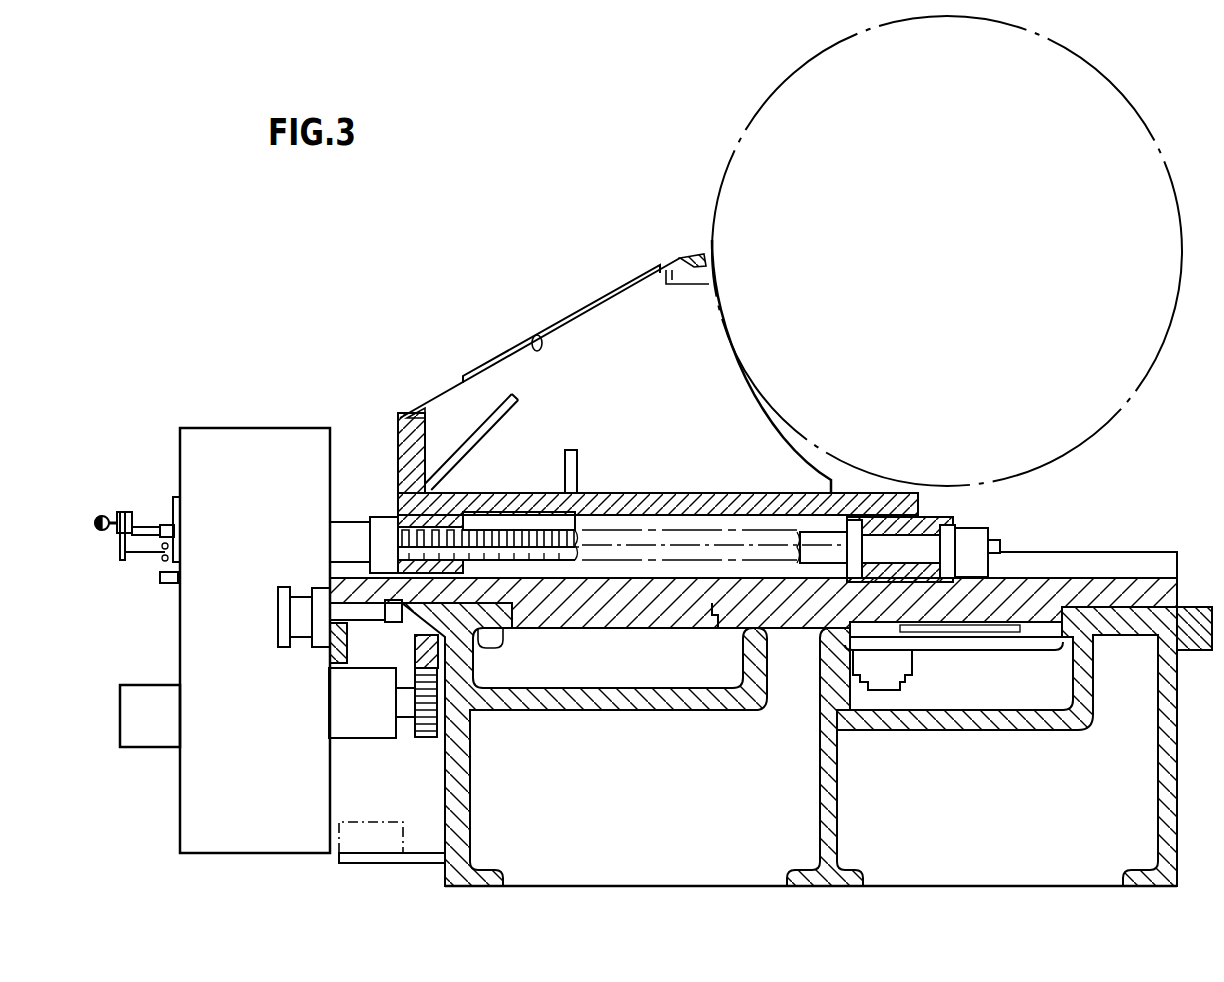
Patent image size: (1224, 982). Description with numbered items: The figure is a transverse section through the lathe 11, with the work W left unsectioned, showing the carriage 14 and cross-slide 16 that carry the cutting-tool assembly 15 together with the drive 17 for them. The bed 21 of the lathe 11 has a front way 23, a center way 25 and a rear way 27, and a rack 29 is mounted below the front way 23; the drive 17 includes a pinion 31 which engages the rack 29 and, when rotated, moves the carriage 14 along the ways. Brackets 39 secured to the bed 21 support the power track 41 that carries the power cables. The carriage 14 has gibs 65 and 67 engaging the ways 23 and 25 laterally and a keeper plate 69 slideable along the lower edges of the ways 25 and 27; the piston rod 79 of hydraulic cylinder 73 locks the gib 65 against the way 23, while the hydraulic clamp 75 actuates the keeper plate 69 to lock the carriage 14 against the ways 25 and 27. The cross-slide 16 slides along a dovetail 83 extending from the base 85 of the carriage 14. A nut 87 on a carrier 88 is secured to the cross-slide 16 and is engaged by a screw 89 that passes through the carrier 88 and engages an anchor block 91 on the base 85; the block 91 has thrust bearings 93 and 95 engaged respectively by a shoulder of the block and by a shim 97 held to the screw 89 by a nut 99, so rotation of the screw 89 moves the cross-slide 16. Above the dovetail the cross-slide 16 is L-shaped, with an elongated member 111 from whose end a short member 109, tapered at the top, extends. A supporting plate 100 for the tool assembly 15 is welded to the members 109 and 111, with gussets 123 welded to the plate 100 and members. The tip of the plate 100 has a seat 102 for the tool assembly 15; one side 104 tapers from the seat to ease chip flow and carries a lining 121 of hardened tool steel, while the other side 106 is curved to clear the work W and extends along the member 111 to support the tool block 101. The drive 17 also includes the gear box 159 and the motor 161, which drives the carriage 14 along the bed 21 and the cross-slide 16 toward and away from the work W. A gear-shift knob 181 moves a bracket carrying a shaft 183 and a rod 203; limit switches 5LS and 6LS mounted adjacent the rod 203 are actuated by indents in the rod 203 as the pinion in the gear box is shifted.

The work W is at (957, 312).
The lathe 11 is at (807, 734).
The carriage 14 is at (650, 634).
The cutting-tool assembly 15 is at (506, 311).
The cross-slide 16 is at (731, 490).
The drive 17 is at (154, 557).
The bed 21 is at (467, 830).
The front way 23 is at (503, 650).
The center way 25 is at (750, 630).
The rear way 27 is at (1134, 633).
The rack 29 is at (414, 650).
The pinion 31 is at (428, 737).
The brackets 39 is at (345, 858).
The power track 41 is at (397, 838).
The gib 65 is at (396, 618).
The gib 67 is at (722, 620).
The keeper plate 69 is at (993, 648).
The hydraulic cylinder 73 is at (278, 625).
The hydraulic clamp 75 is at (906, 665).
The piston rod 79 is at (343, 596).
The dovetail 83 is at (1134, 560).
The base 85 is at (1070, 592).
The nut 87 is at (392, 515).
The carrier 88 is at (457, 517).
The screw 89 is at (532, 537).
The anchor block 91 is at (895, 520).
The thrust bearing 93 is at (850, 523).
The thrust bearing 95 is at (955, 523).
The shim 97 is at (968, 534).
The nut 99 is at (997, 533).
The supporting plate 100 is at (444, 393).
The tool block 101 is at (686, 266).
The seat 102 is at (676, 292).
The side 104 is at (537, 340).
The curved side 106 is at (757, 418).
The short member 109 is at (398, 433).
The elongated member 111 is at (652, 492).
The lining 121 is at (610, 298).
The gussets 123 is at (512, 400).
The gear box 159 is at (264, 716).
The motor 161 is at (159, 726).
The gear-shift knob 181 is at (102, 515).
The shaft 183 is at (152, 520).
The rod 203 is at (141, 555).
The limit switch 5LS is at (178, 578).
The limit switch 6LS is at (176, 530).